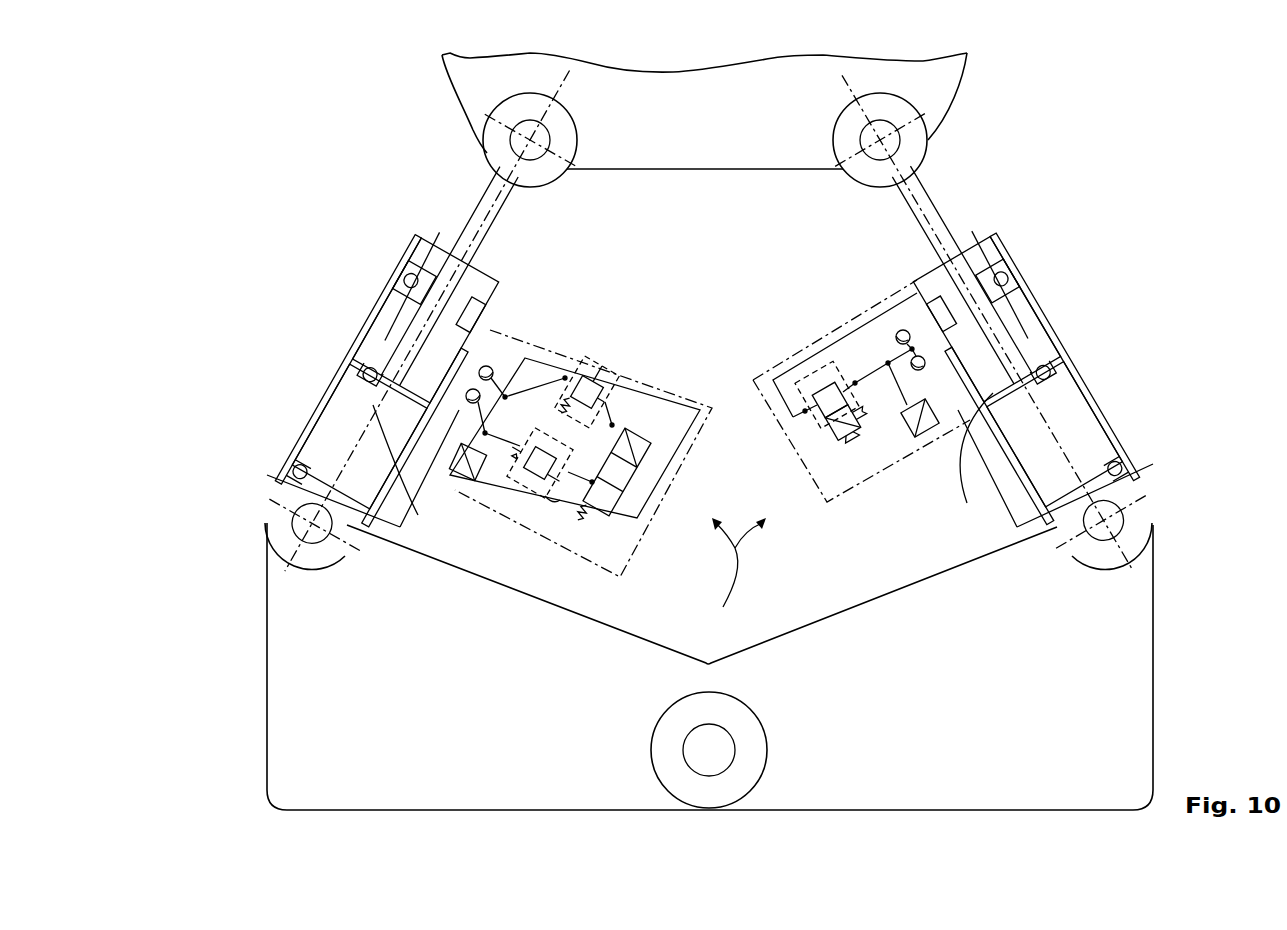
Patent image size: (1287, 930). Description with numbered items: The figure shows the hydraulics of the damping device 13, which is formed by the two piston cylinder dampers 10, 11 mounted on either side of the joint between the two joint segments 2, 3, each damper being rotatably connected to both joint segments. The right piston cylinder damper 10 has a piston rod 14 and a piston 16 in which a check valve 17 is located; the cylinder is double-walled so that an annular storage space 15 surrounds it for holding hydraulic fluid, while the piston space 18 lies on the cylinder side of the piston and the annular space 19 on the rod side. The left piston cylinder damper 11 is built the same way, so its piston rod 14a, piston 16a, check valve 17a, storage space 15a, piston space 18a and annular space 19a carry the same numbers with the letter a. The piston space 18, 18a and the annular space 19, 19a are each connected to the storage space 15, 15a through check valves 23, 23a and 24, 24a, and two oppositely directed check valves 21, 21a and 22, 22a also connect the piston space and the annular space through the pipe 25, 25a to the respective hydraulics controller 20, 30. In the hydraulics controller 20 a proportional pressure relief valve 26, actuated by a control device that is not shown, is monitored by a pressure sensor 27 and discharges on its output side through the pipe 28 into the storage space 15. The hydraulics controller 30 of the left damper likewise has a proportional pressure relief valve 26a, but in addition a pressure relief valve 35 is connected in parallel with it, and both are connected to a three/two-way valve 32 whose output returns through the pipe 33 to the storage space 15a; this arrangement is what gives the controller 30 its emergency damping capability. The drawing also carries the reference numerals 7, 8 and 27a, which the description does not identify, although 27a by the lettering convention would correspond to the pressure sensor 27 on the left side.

The joint segment 2 is at (945, 85).
The joint segment 3 is at (888, 607).
The guide arm 7 is at (708, 446).
The mounting block 8 is at (394, 522).
The piston cylinder damper 10 is at (1031, 289).
The piston cylinder damper 11 is at (293, 427).
The damping device 13 is at (739, 578).
The piston rod 14 is at (935, 203).
The piston rod 14a is at (485, 208).
The storage space 15 is at (1050, 320).
The storage space 15a is at (363, 327).
The piston 16 is at (1047, 372).
The piston 16a is at (345, 380).
The check valve 17 is at (1050, 374).
The check valve 17a is at (368, 373).
The piston space 18 is at (1087, 430).
The piston space 18a is at (330, 413).
The annular space 19 is at (1030, 312).
The annular space 19a is at (393, 300).
The hydraulics controller 20 is at (793, 358).
The check valve 21 is at (925, 368).
The check valve 21a is at (452, 478).
The check valve 22 is at (897, 330).
The check valve 22a is at (492, 366).
The check valve 23 is at (1120, 468).
The check valve 23a is at (297, 466).
The check valve 24 is at (998, 280).
The check valve 24a is at (410, 278).
The pipe 25 is at (870, 375).
The pipe 25a is at (480, 394).
The proportional pressure relief valve 26 is at (805, 413).
The proportional pressure relief valve 26a is at (545, 496).
The pressure sensor 27 is at (930, 443).
The pump valve 27a is at (490, 485).
The pipe 28 is at (850, 327).
The hydraulics controller 30 is at (698, 390).
The 3/2-way valve 32 is at (640, 482).
The pipe 33 is at (703, 420).
The pressure relief valve 35 is at (603, 390).